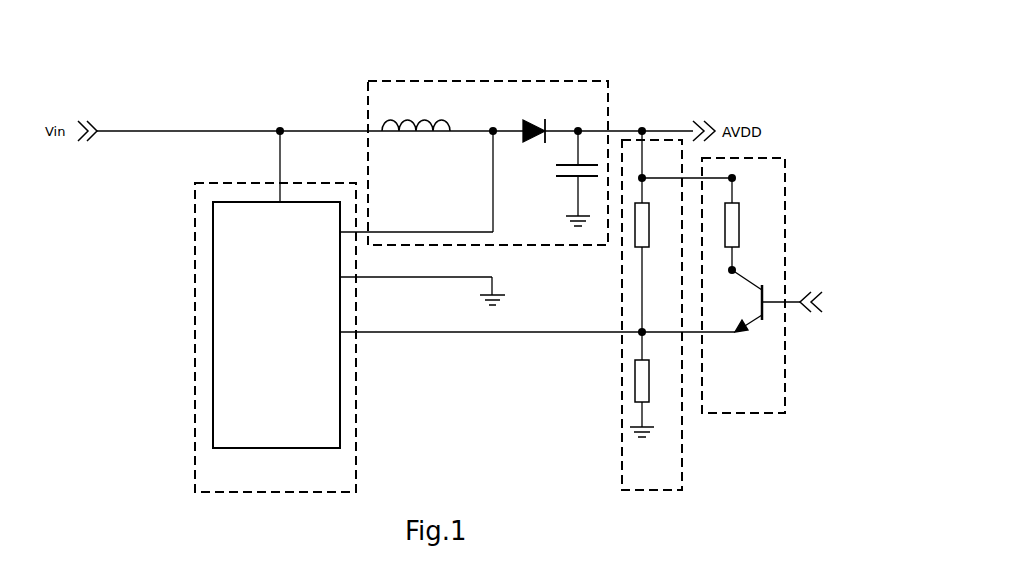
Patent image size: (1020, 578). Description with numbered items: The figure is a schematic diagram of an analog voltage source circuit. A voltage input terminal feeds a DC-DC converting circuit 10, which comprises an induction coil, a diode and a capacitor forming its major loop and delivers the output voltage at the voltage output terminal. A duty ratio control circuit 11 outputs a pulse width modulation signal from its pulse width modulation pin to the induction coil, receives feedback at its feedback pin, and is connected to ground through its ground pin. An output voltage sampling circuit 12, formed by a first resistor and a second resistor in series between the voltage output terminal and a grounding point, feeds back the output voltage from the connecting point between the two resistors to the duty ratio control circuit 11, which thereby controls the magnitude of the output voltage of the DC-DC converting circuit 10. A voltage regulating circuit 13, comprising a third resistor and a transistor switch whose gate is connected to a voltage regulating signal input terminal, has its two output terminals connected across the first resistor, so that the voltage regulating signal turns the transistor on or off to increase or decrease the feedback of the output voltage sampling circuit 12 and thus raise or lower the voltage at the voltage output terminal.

The DC-DC converting circuit 10 is at (433, 102).
The duty ratio control circuit 11 is at (203, 317).
The output voltage sampling circuit 12 is at (635, 470).
The voltage regulating circuit 13 is at (762, 385).